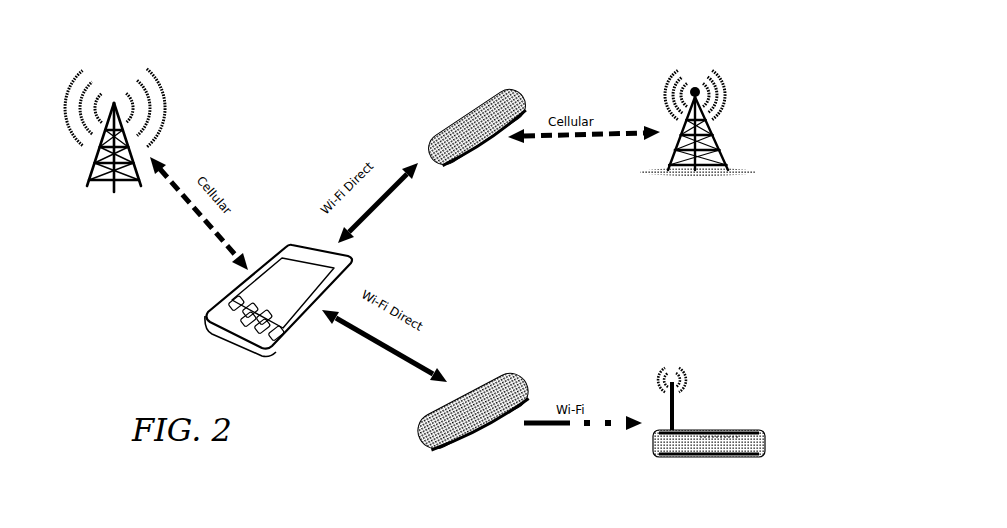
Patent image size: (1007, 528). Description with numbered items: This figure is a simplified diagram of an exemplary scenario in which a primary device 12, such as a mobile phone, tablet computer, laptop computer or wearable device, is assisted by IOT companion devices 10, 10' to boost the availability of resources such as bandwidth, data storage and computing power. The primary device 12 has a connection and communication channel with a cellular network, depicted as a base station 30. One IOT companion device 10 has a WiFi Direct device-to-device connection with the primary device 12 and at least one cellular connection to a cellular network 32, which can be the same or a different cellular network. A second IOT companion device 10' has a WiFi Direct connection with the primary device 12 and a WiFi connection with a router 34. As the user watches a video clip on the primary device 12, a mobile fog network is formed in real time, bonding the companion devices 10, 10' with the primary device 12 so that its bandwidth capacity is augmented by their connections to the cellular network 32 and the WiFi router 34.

The IOT companion device 10 is at (492, 115).
The second IOT companion device 10' is at (492, 399).
The primary device 12 is at (285, 336).
The base station 30 is at (173, 92).
The cellular network 32 is at (735, 133).
The router 34 is at (718, 410).